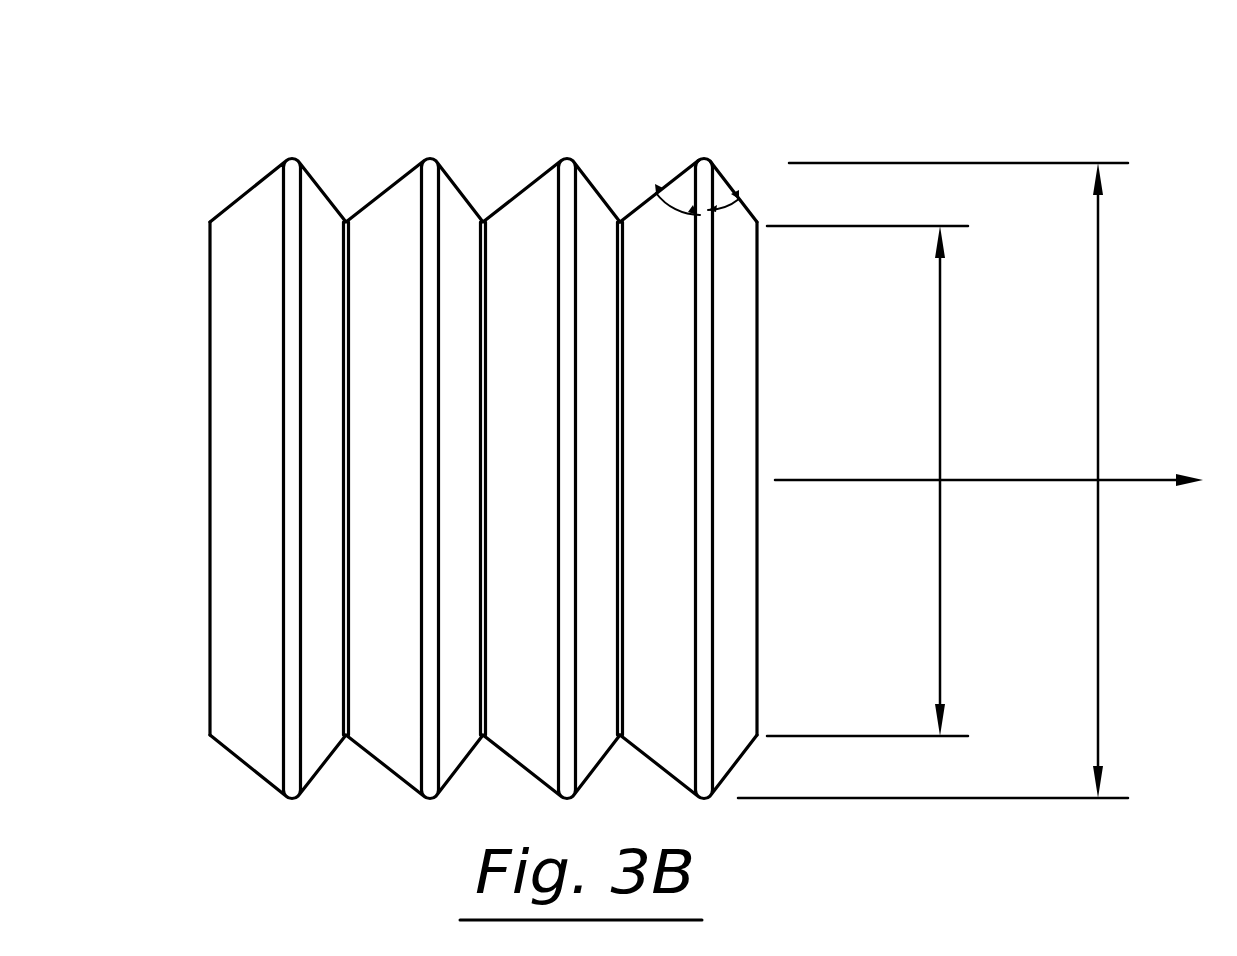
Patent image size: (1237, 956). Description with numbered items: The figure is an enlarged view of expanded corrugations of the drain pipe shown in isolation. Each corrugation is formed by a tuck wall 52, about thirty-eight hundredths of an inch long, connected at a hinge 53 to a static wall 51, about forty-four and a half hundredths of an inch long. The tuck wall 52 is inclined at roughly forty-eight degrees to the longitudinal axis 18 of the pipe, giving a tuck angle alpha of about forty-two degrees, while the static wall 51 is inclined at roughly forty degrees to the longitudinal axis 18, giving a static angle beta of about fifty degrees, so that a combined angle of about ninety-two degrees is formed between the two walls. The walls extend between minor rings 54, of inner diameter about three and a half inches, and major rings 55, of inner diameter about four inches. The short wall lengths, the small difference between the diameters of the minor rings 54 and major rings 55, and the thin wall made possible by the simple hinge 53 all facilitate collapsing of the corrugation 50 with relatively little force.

The longitudinal axis 18 is at (846, 478).
The pleated sheet 50 is at (550, 436).
The static wall 51 is at (723, 180).
The tuck wall 52 is at (676, 183).
The hinge 53 is at (703, 160).
The minor ring 54 is at (940, 577).
The major ring 55 is at (1098, 582).